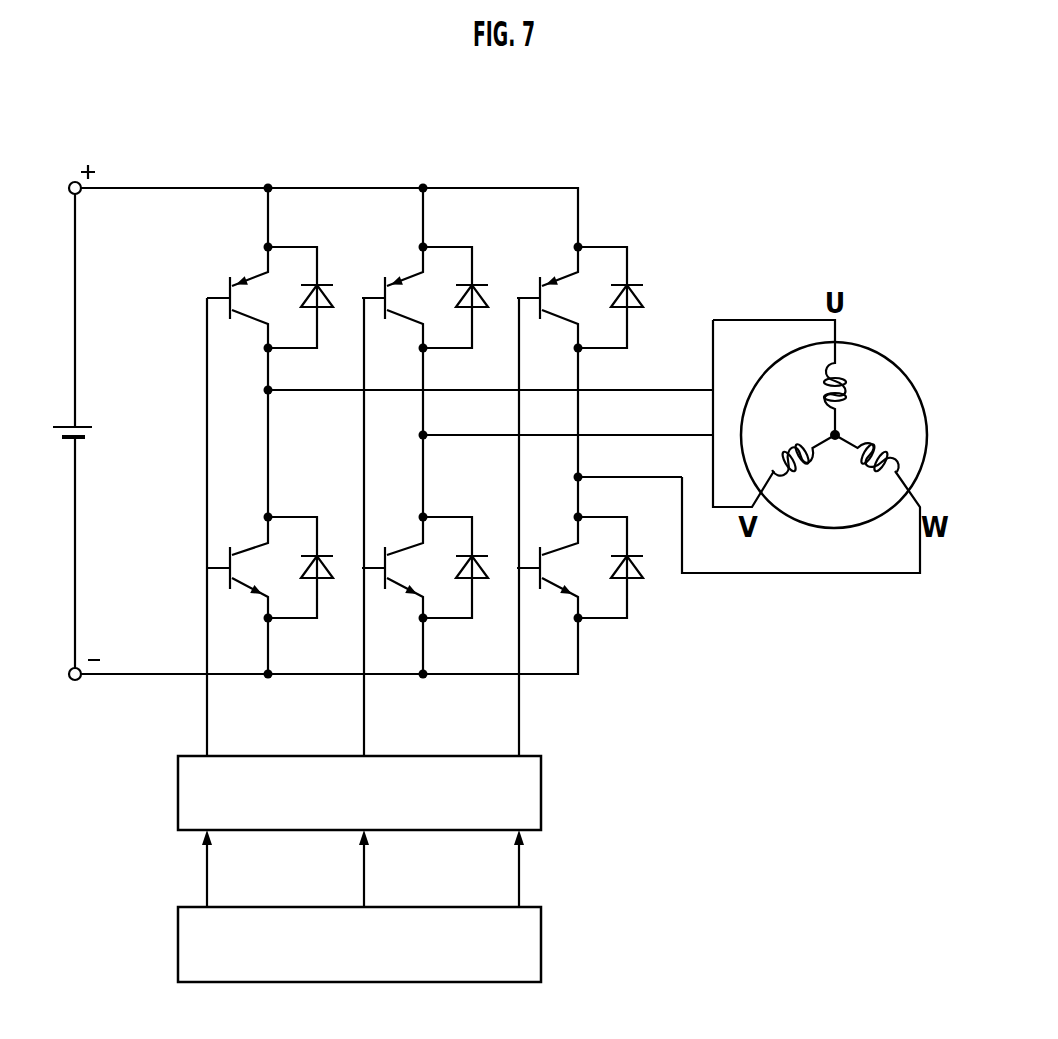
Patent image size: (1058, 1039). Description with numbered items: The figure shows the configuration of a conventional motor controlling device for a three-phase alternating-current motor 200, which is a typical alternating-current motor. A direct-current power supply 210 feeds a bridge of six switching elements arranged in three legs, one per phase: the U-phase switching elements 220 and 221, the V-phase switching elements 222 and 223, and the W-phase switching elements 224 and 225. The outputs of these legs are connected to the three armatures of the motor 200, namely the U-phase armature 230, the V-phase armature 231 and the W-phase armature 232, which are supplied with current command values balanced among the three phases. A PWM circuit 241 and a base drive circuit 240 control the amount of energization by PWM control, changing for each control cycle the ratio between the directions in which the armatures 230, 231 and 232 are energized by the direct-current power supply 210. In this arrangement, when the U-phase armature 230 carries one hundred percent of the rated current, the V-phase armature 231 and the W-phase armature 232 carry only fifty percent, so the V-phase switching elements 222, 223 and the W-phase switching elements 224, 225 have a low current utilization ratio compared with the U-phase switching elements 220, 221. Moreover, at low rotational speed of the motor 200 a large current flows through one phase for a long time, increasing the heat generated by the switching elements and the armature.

The alternating-current motor 200 is at (891, 358).
The direct-current power supply 210 is at (86, 424).
The U-phase switching element 220 is at (231, 278).
The U-phase switching element 221 is at (231, 548).
The V-phase switching element 222 is at (386, 278).
The V-phase switching element 223 is at (386, 548).
The W-phase switching element 224 is at (541, 278).
The W-phase switching element 225 is at (541, 548).
The U-phase armature 230 is at (849, 390).
The V-phase armature 231 is at (796, 455).
The W-phase armature 232 is at (863, 473).
The base drive circuit 240 is at (543, 791).
The PWM circuit 241 is at (543, 941).